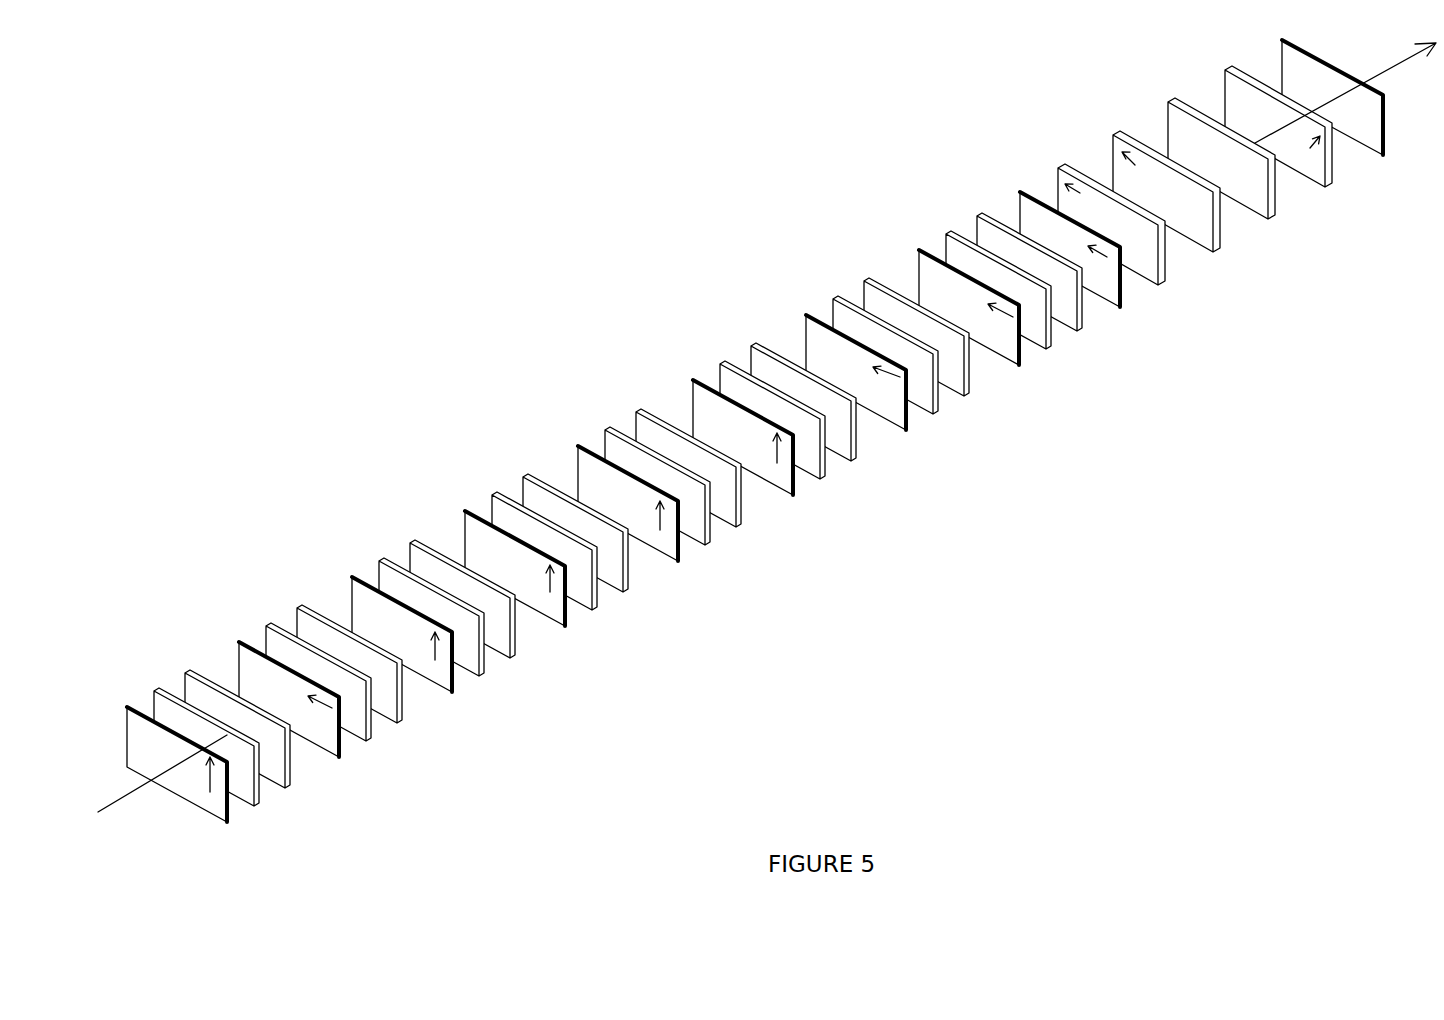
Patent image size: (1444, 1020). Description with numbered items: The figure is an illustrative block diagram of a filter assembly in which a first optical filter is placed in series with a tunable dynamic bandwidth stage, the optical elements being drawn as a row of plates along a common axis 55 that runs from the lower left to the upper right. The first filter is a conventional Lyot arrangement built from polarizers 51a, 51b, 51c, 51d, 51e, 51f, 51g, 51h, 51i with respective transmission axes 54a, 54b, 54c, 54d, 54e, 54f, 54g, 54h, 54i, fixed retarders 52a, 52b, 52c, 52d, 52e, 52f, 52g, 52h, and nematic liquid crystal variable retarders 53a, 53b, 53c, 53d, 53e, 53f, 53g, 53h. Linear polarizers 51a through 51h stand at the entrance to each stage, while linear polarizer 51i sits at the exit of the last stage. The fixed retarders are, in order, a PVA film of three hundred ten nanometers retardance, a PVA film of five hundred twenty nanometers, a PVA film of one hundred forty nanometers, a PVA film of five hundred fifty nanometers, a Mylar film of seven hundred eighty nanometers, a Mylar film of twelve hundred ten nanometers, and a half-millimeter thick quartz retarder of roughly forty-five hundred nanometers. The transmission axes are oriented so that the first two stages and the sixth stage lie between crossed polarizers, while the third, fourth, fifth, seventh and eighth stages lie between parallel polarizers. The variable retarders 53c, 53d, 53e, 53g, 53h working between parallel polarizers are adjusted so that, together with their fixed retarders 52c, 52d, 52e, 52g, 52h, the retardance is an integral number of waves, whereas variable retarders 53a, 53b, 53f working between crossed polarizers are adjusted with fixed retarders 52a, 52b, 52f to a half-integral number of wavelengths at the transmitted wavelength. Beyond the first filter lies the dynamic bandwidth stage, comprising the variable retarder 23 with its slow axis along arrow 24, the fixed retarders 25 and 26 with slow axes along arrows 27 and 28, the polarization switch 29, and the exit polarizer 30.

The variable retarder 23 is at (1165, 281).
The arrow 24 is at (1086, 204).
The fixed retarder 25 is at (1220, 248).
The fixed retarder 26 is at (1332, 183).
The arrow 27 is at (1140, 173).
The arrow 28 is at (1301, 149).
The polarization switch 29 is at (1275, 215).
The exit polarizer 30 is at (1383, 155).
The polarizer 51a is at (227, 822).
The polarizer 51b is at (339, 757).
The polarizer 51c is at (452, 692).
The polarizer 51d is at (565, 626).
The polarizer 51e is at (678, 561).
The polarizer 51f is at (793, 495).
The polarizer 51g is at (906, 430).
The polarizer 51h is at (1019, 365).
The polarizer 51i is at (1120, 307).
The fixed retarder 52a is at (259, 803).
The fixed retarder 52b is at (371, 738).
The fixed retarder 52c is at (484, 673).
The fixed retarder 52d is at (597, 607).
The fixed retarder 52e is at (710, 542).
The fixed retarder 52f is at (825, 476).
The fixed retarder 52g is at (938, 411).
The fixed retarder 52h is at (1051, 346).
The nematic liquid crystal variable retarder 53a is at (290, 785).
The nematic liquid crystal variable retarder 53b is at (402, 720).
The nematic liquid crystal variable retarder 53c is at (515, 655).
The nematic liquid crystal variable retarder 53d is at (628, 589).
The nematic liquid crystal variable retarder 53e is at (741, 524).
The nematic liquid crystal variable retarder 53f is at (856, 458).
The nematic liquid crystal variable retarder 53g is at (969, 393).
The nematic liquid crystal variable retarder 53h is at (1082, 328).
The transmission axis 54a is at (202, 785).
The transmission axis 54b is at (318, 710).
The transmission axis 54c is at (432, 652).
The transmission axis 54d is at (545, 587).
The transmission axis 54e is at (657, 524).
The transmission axis 54f is at (775, 459).
The transmission axis 54g is at (887, 387).
The transmission axis 54h is at (1006, 322).
The transmission axis 54i is at (1100, 254).
The optical axis 55 is at (108, 806).